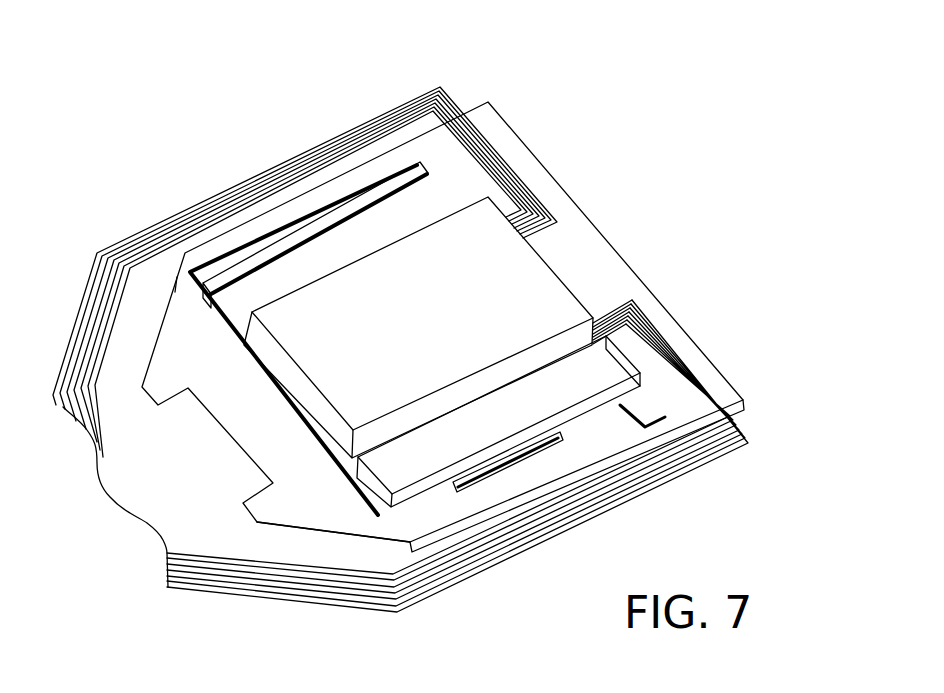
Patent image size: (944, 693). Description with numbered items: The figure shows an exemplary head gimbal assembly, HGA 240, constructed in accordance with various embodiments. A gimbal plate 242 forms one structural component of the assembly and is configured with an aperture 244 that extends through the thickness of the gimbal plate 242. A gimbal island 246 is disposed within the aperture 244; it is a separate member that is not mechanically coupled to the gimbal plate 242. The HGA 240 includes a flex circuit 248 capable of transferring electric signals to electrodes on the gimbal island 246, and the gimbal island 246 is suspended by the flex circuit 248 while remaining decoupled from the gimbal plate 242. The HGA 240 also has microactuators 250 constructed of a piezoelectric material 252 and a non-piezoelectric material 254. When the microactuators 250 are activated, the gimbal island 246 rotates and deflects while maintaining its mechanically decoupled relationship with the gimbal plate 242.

The head gimbal assembly (HGA) 240 is at (722, 185).
The gimbal plate 242 is at (686, 355).
The aperture 244 is at (292, 520).
The gimbal island 246 is at (520, 282).
The flex circuit 248 is at (390, 107).
The microactuators 250 is at (473, 177).
The piezoelectric material 252 is at (655, 377).
The non-piezoelectric material 254 is at (625, 352).